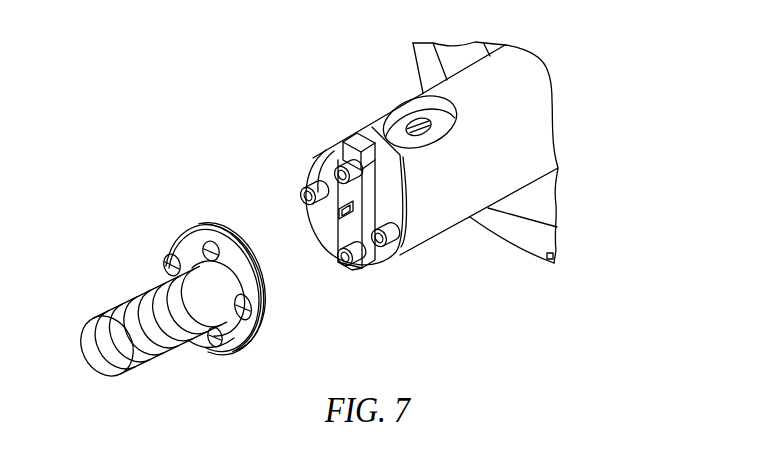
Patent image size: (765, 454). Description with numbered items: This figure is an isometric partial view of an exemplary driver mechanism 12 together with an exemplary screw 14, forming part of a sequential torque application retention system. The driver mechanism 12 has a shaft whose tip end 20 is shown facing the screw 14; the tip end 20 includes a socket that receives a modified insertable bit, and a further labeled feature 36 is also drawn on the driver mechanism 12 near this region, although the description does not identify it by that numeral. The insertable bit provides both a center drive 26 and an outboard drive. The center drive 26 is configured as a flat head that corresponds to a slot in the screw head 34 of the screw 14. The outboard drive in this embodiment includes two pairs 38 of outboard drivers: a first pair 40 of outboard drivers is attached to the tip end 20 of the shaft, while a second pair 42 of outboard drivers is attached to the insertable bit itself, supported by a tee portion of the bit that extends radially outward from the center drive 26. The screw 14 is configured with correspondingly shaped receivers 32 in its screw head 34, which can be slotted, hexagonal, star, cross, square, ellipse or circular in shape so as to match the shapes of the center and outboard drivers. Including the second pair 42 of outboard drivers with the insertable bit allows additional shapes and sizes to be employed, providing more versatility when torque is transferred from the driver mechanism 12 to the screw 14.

The driver mechanism 12 is at (548, 290).
The screw 14 is at (104, 296).
The tip end 20 is at (470, 224).
The center drive 26 is at (332, 232).
The receiver 32 is at (166, 267).
The screw head 34 is at (252, 344).
The boss screw 36 is at (430, 133).
The two pairs of drivers 38 is at (344, 120).
The first pair of outboard drivers 40 is at (307, 186).
The second pair of outboard drivers 42 is at (372, 268).